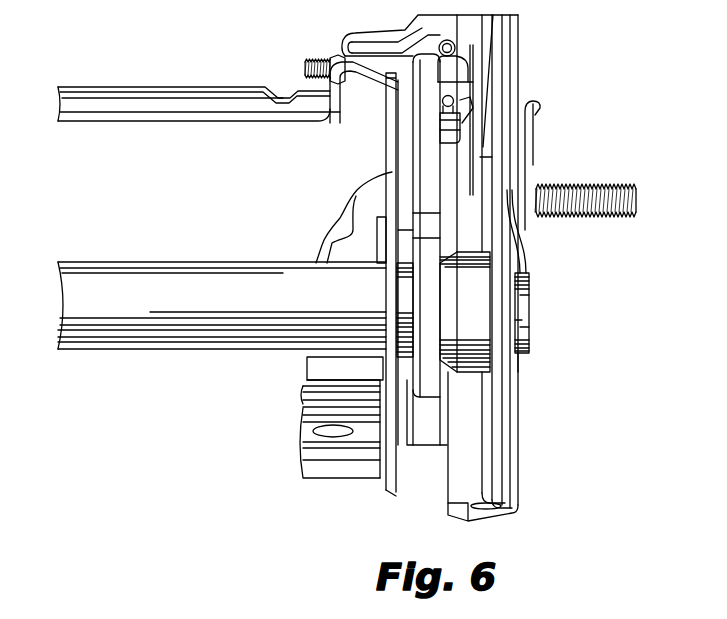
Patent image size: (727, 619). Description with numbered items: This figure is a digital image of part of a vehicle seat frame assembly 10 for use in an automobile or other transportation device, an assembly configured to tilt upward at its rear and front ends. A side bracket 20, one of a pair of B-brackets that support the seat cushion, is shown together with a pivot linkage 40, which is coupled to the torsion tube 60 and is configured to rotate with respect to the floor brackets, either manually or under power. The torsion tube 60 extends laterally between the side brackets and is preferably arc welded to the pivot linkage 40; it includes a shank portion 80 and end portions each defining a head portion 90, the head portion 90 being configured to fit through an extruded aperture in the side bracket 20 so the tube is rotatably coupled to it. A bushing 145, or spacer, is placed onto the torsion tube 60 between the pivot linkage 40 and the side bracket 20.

The vehicle seat frame assembly 10 is at (640, 247).
The side bracket 20 is at (508, 470).
The pivot linkage 40 is at (427, 132).
The torsion tube 60 is at (174, 262).
The shank portion 80 is at (250, 308).
The head portion 90 is at (522, 303).
The bushing 145 is at (477, 313).